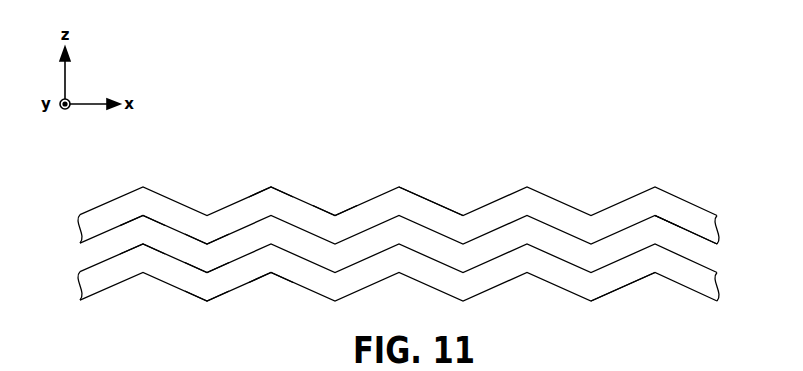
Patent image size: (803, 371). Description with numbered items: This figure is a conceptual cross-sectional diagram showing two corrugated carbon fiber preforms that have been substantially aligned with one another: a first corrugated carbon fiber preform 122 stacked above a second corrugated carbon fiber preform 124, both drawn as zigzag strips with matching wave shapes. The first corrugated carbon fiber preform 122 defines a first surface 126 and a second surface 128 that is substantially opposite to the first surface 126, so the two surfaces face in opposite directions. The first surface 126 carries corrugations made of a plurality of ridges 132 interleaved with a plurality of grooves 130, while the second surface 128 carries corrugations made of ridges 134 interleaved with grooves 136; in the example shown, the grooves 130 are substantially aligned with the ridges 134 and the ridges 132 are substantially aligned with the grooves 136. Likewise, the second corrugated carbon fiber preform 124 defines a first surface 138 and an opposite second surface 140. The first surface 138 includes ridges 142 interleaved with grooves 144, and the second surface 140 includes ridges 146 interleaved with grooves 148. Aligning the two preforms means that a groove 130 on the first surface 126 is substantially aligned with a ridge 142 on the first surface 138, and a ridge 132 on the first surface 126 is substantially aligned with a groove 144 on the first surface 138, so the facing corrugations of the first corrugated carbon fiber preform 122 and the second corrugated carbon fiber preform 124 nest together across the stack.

The first corrugated carbon fiber preform 122 is at (719, 231).
The second corrugated carbon fiber preform 124 is at (719, 287).
The first surface 126 is at (684, 229).
The second surface 128 is at (431, 200).
The grooves 130 is at (141, 213).
The ridges 132 is at (204, 242).
The ridges 134 is at (268, 186).
The grooves 136 is at (332, 215).
The first surface 138 is at (667, 250).
The second surface 140 is at (640, 275).
The ridges 142 is at (141, 242).
The grooves 144 is at (203, 274).
The ridges 146 is at (205, 301).
The grooves 148 is at (268, 274).